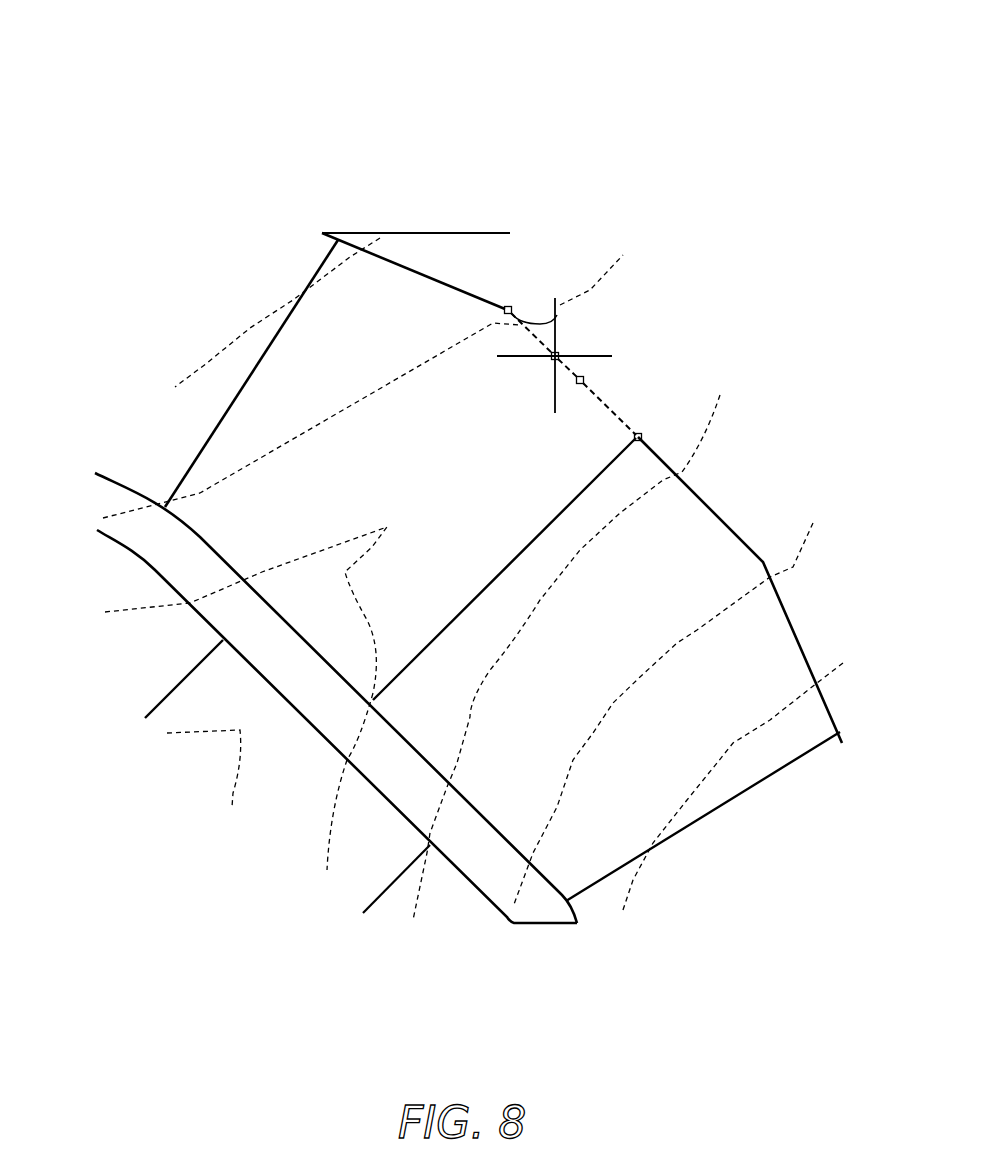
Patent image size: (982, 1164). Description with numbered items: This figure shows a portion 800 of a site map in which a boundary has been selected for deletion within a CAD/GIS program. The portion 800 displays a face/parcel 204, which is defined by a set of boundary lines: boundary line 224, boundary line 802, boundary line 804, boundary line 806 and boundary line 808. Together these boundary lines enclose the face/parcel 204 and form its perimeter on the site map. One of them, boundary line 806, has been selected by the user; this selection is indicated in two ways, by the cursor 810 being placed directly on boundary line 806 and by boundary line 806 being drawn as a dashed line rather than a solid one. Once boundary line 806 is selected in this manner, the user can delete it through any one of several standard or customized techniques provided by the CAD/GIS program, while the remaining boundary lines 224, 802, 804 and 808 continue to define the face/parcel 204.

The portion of site map 800 is at (286, 167).
The face/parcel 204 is at (435, 579).
The boundary line 224 is at (258, 362).
The boundary line 802 is at (317, 652).
The boundary line 804 is at (402, 266).
The boundary line 806 is at (591, 392).
The boundary line 808 is at (560, 515).
The cursor 810 is at (556, 315).